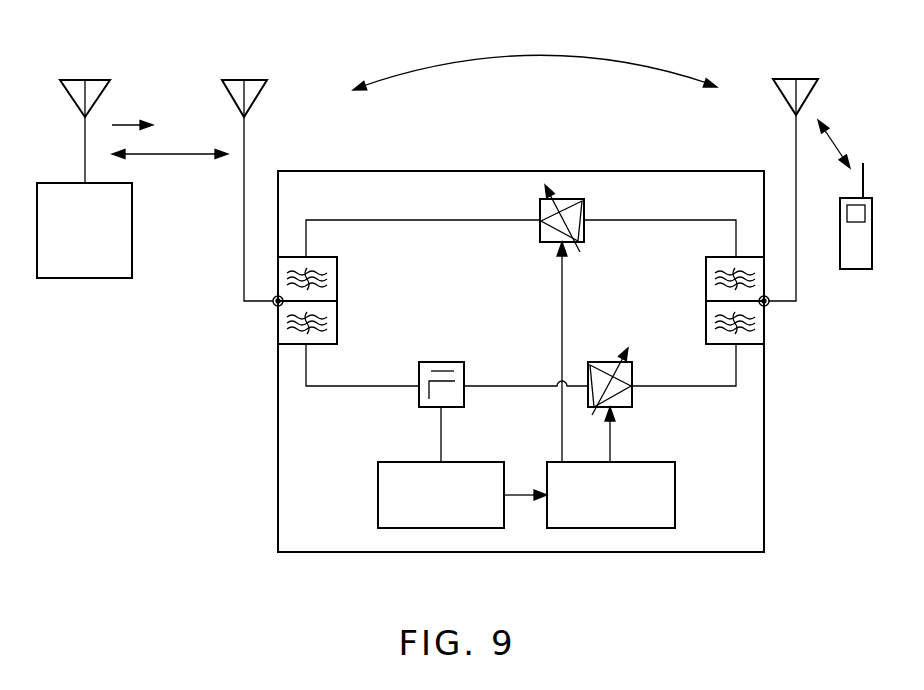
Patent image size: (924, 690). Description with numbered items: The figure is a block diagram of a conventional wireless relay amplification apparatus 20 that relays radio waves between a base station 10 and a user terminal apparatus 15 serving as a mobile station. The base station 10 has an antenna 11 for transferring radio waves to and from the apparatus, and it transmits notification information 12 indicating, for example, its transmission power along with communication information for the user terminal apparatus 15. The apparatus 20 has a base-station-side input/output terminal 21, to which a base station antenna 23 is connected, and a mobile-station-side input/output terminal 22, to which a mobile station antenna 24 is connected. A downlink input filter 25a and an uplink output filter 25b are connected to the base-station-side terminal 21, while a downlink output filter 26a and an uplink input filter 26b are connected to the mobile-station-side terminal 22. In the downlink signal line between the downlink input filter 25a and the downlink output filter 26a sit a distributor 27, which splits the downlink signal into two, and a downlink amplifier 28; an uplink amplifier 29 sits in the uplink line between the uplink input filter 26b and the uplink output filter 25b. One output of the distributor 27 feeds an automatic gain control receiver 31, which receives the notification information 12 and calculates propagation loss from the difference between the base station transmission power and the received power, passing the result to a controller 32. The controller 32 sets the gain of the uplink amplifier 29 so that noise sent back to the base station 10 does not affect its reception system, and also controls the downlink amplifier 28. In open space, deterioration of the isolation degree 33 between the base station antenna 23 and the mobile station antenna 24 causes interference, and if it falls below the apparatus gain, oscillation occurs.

The base station 10 is at (85, 279).
The antenna 11 is at (90, 78).
The notification information 12 is at (125, 120).
The user terminal apparatus 15 is at (855, 270).
The wireless relay amplification apparatus 20 is at (764, 476).
The base-station-side input/output terminal 21 is at (270, 306).
The mobile-station-side input/output terminal 22 is at (770, 306).
The base station antenna 23 is at (265, 86).
The mobile station antenna 24 is at (819, 86).
The downlink input filter 25a is at (338, 322).
The uplink output filter 25b is at (338, 277).
The downlink output filter 26a is at (704, 324).
The uplink input filter 26b is at (704, 280).
The distributor 27 is at (444, 361).
The downlink amplifier 28 is at (633, 398).
The uplink amplifier 29 is at (585, 203).
The automatic gain control receiver 31 is at (376, 495).
The controller 32 is at (675, 494).
The isolation degree 33 is at (542, 62).